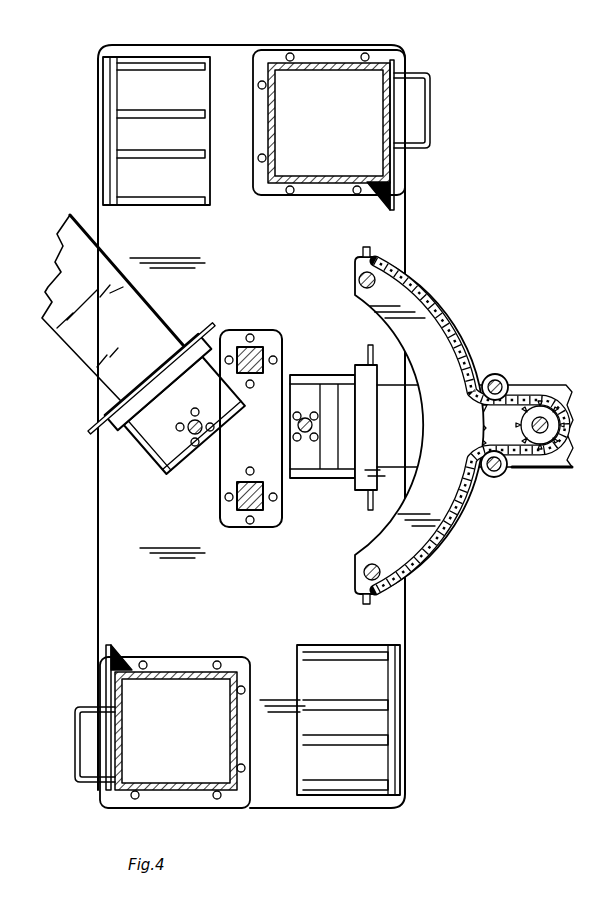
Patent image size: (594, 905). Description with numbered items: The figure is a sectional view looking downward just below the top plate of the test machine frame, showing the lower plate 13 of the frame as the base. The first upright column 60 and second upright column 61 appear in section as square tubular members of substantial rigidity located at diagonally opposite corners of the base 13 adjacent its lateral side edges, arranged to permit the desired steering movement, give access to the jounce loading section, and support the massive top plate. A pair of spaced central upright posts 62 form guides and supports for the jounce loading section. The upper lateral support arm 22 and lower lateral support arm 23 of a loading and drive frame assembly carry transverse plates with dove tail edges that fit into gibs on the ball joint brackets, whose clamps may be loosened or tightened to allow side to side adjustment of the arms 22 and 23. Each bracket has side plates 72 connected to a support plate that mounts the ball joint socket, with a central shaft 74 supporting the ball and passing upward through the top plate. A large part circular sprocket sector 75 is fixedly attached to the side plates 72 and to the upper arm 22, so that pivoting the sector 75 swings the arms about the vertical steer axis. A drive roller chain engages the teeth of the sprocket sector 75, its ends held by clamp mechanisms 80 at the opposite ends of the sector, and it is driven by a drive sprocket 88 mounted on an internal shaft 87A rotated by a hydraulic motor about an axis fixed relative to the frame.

The lower plate 13 is at (112, 603).
The upper lateral support arm 22 is at (405, 460).
The lower lateral support arm 23 is at (62, 267).
The first upright column 60 is at (185, 672).
The second upright column 61 is at (325, 62).
The central upright post 62 is at (262, 350).
The side plate 72 is at (226, 345).
The central shaft 74 is at (313, 427).
The sprocket sector 75 is at (442, 324).
The clamp mechanism 80 is at (373, 257).
The internal shaft 87A is at (532, 410).
The drive sprocket 88 is at (540, 446).